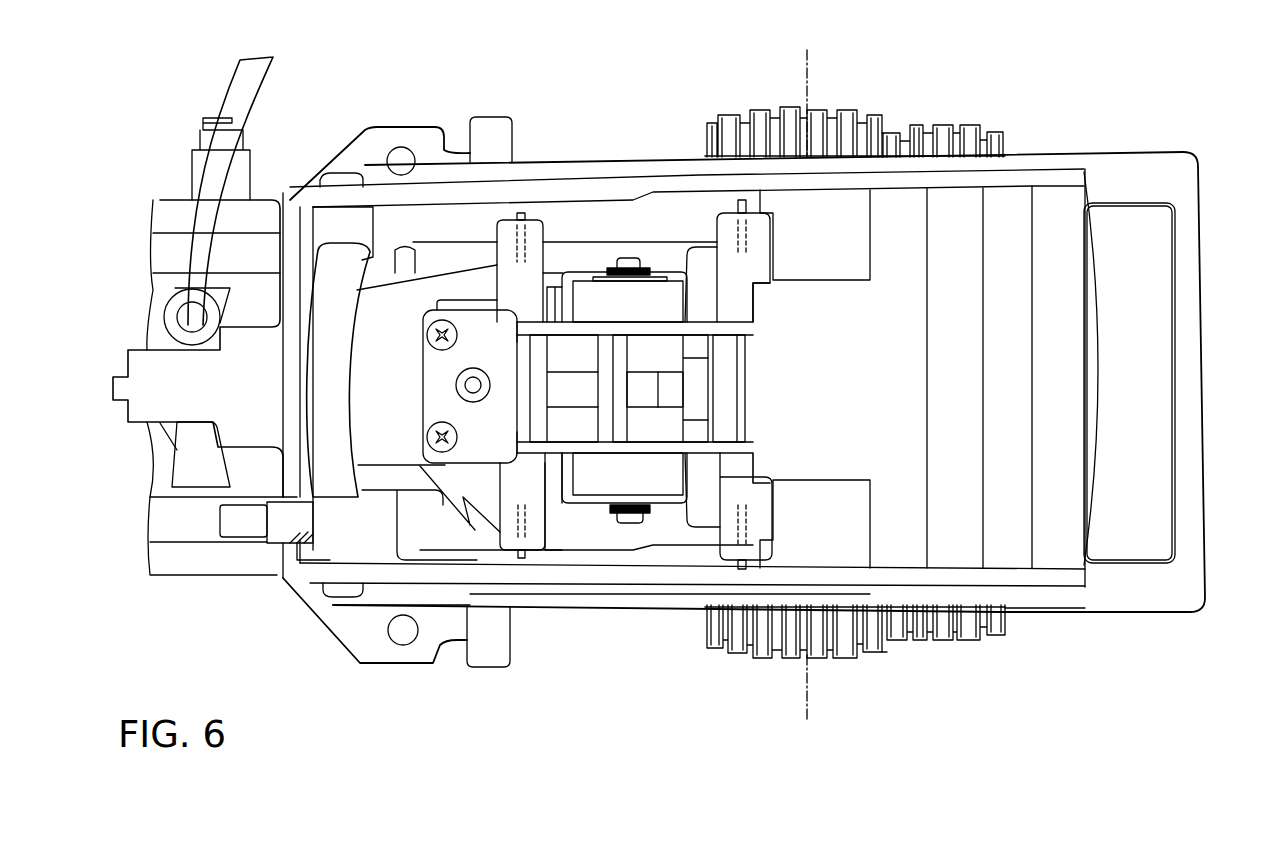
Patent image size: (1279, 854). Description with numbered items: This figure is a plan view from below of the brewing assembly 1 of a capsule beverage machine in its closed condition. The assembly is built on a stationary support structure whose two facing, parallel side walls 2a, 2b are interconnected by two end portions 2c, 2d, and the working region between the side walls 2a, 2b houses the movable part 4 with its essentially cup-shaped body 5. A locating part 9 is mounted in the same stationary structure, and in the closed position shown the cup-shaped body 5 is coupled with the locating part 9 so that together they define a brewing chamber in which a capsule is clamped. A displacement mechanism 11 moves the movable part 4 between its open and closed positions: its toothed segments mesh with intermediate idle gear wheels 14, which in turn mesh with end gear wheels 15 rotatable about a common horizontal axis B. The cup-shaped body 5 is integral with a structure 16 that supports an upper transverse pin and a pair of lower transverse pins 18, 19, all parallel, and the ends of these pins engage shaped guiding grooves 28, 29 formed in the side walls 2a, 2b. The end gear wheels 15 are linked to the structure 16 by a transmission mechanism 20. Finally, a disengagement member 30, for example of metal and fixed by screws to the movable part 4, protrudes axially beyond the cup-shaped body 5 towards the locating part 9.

The brewing assembly 1 is at (930, 93).
The side wall 2a is at (660, 600).
The side wall 2b is at (565, 252).
The end portion 2c is at (148, 267).
The end portion 2d is at (1169, 302).
The movable part 4 is at (455, 250).
The cup-shaped body 5 is at (435, 315).
The locating part 9 is at (360, 360).
The displacement mechanism 11 is at (884, 673).
The intermediate idle gear wheels 14 is at (960, 130).
The end gear wheels 15 is at (843, 127).
The structure 16 is at (600, 258).
The lower transverse pin 18 is at (520, 213).
The lower transverse pin 19 is at (740, 200).
The transmission mechanism 20 is at (733, 471).
The guiding groove 28 is at (553, 223).
The guiding groove 29 is at (694, 236).
The disengagement member 30 is at (330, 520).
The axis B- B is at (807, 75).